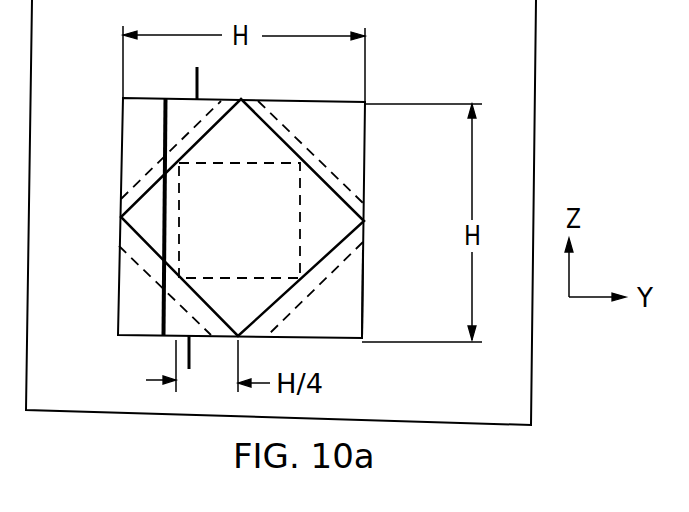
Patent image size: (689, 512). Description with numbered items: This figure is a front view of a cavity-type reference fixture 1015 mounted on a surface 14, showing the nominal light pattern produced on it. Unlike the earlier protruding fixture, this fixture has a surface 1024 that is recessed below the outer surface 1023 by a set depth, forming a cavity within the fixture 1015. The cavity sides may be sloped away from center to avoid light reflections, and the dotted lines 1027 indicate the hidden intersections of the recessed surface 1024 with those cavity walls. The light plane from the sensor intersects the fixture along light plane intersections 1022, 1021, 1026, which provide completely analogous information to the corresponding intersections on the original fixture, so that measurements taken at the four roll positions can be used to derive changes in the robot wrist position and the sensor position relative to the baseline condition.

The surface 14 is at (444, 388).
The fixture 1015 is at (366, 158).
The light plane intersection 1021 is at (166, 136).
The light plane intersection 1022 is at (173, 228).
The surface 1023 is at (345, 292).
The surface 1024 is at (344, 230).
The light plane intersection 1026 is at (197, 75).
The dotted lines 1027 is at (318, 160).